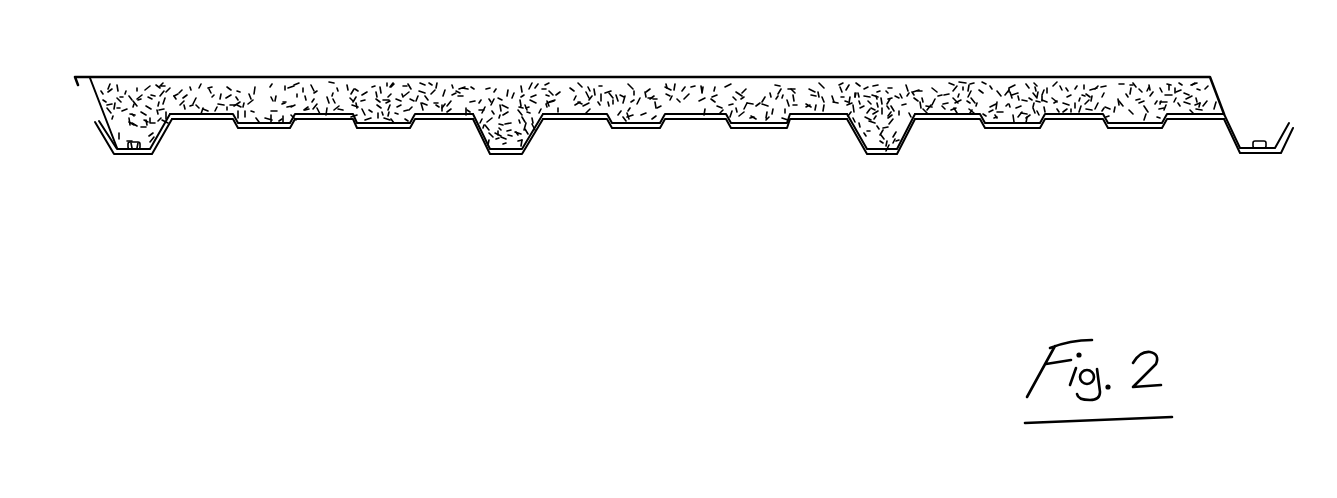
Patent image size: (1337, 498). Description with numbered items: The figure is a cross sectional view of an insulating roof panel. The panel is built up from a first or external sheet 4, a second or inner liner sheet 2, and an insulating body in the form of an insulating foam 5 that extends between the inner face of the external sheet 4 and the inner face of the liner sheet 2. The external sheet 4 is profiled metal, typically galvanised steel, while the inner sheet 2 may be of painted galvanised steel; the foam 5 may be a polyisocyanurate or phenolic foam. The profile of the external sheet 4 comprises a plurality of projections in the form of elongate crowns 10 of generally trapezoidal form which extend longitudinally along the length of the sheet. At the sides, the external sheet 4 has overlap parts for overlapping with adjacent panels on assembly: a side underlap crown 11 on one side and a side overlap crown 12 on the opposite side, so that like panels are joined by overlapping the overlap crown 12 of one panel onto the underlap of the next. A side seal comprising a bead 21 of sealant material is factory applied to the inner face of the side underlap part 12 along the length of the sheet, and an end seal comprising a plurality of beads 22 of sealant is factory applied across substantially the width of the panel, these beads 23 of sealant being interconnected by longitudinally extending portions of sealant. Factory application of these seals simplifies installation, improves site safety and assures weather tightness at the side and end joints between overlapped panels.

The inner sheet 2 is at (742, 78).
The external sheet 4 is at (684, 131).
The insulating foam 5 is at (578, 100).
The elongate crowns 10 is at (512, 156).
The side underlap crown 11 is at (109, 139).
The side overlap crown 12 is at (1260, 154).
The bead of sealant material 21 is at (1261, 148).
The beads of sealant material 22 is at (337, 128).
The beads of sealant 23 is at (135, 150).